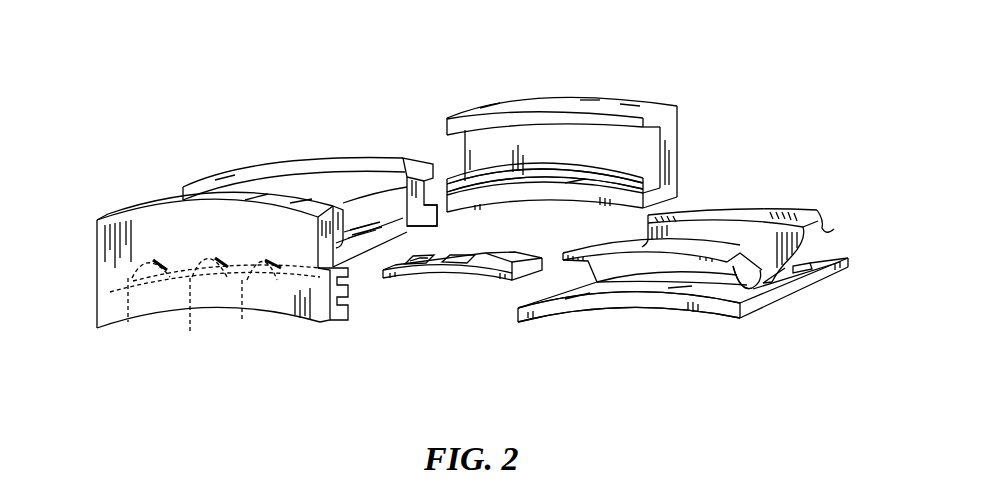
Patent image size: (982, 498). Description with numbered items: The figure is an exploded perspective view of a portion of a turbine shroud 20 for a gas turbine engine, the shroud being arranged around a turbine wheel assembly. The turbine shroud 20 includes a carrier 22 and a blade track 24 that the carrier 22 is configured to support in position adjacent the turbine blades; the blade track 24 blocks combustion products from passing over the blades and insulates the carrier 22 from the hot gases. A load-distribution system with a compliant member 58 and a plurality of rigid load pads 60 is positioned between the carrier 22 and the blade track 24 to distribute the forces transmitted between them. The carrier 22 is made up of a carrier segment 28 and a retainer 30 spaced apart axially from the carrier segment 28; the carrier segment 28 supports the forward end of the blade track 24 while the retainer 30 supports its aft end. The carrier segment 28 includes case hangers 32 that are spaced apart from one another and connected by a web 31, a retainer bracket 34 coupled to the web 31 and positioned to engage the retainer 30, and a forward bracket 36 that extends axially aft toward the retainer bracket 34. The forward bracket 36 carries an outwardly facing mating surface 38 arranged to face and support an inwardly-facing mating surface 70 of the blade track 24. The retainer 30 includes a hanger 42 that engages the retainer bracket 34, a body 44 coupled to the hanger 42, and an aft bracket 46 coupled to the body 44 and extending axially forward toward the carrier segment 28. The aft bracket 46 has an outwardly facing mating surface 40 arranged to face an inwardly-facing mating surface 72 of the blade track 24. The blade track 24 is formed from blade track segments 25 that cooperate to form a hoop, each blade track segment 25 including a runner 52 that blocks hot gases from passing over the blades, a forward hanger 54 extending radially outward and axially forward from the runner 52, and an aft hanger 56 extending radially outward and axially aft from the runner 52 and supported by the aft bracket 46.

The turbine shroud 20 is at (707, 69).
The carrier 22 is at (445, 47).
The blade track 24 is at (676, 364).
The blade track segment 25 is at (616, 323).
The carrier segment 28 is at (242, 157).
The retainer 30 is at (565, 193).
The web 31 is at (364, 222).
The case hangers 32 is at (331, 197).
The retainer bracket 34 is at (437, 223).
The forward bracket 36 is at (337, 323).
The outwardly facing mating surface 38 is at (349, 281).
The outwardly facing mating surface 40 is at (606, 168).
The hanger 42 is at (546, 92).
The body 44 is at (686, 147).
The aft bracket 46 is at (655, 169).
The runner 52 is at (722, 322).
The forward hanger 54 is at (683, 241).
The aft hanger 56 is at (783, 207).
The compliant member 58 is at (503, 283).
The rigid load pads 60 is at (215, 309).
The inwardly-facing mating surface 70 is at (741, 270).
The inwardly-facing mating surface 72 is at (823, 230).